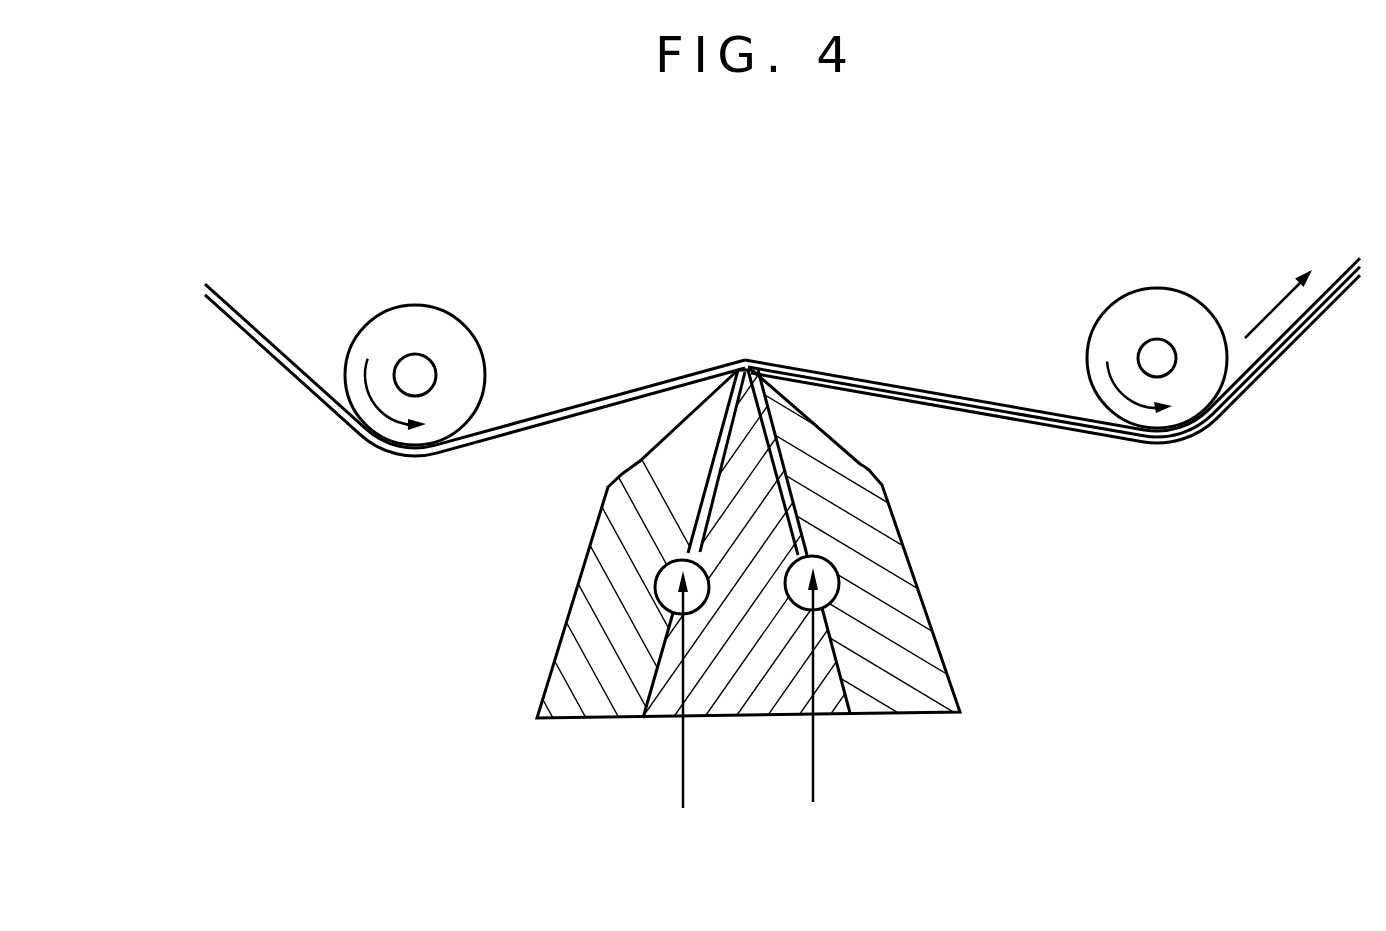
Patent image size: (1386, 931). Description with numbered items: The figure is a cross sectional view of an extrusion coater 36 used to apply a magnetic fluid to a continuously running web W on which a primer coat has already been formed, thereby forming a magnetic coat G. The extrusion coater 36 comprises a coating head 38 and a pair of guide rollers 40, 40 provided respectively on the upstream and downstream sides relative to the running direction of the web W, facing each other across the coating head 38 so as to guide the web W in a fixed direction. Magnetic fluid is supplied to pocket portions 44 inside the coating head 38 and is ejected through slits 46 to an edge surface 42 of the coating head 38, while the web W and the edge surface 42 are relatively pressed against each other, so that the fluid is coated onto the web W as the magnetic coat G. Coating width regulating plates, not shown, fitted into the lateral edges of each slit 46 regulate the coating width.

The web W is at (258, 332).
The magnetic coat G is at (907, 383).
The guide rollers 40 is at (462, 357).
The edge surface 42 is at (759, 350).
The extrusion coater 36 is at (624, 549).
The coating head 38 is at (950, 625).
The pocket portions 44 is at (663, 580).
The slits 46 is at (707, 466).